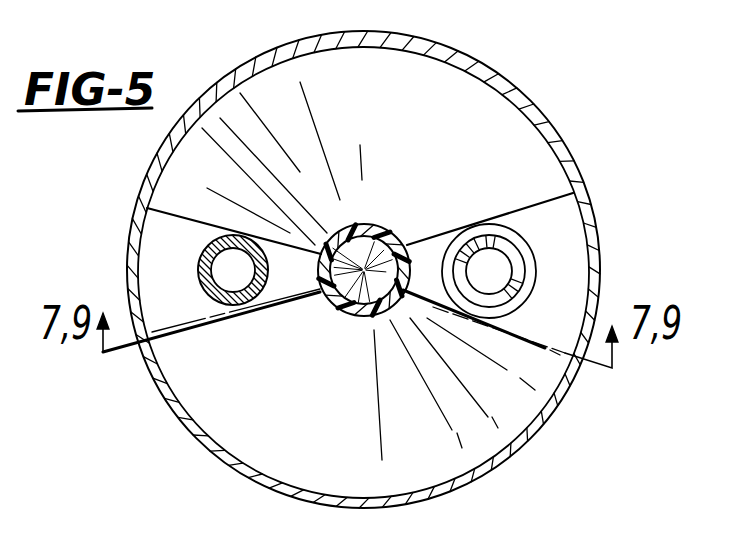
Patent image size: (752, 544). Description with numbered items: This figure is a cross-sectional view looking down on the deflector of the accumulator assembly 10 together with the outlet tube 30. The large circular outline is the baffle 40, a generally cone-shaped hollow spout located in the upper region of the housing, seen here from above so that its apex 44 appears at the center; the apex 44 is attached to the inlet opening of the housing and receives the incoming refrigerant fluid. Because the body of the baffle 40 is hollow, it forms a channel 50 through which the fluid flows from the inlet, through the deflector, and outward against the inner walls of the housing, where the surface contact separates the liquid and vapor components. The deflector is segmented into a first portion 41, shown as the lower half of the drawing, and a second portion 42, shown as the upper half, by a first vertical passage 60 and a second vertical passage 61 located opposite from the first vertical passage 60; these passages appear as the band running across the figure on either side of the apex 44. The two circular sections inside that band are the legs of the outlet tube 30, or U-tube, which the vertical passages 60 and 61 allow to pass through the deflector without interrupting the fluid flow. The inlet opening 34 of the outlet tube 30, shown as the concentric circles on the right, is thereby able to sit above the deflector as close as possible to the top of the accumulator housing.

The accumulator assembly 10 is at (569, 123).
The outlet tube 30 is at (197, 253).
The inlet opening of the outlet tube 34 is at (519, 257).
The baffle 40 is at (459, 121).
The first portion 41 is at (240, 424).
The second portion 42 is at (270, 98).
The apex 44 is at (357, 222).
The channel 50 is at (399, 248).
The first vertical passage 60 is at (196, 285).
The second vertical passage 61 is at (538, 290).